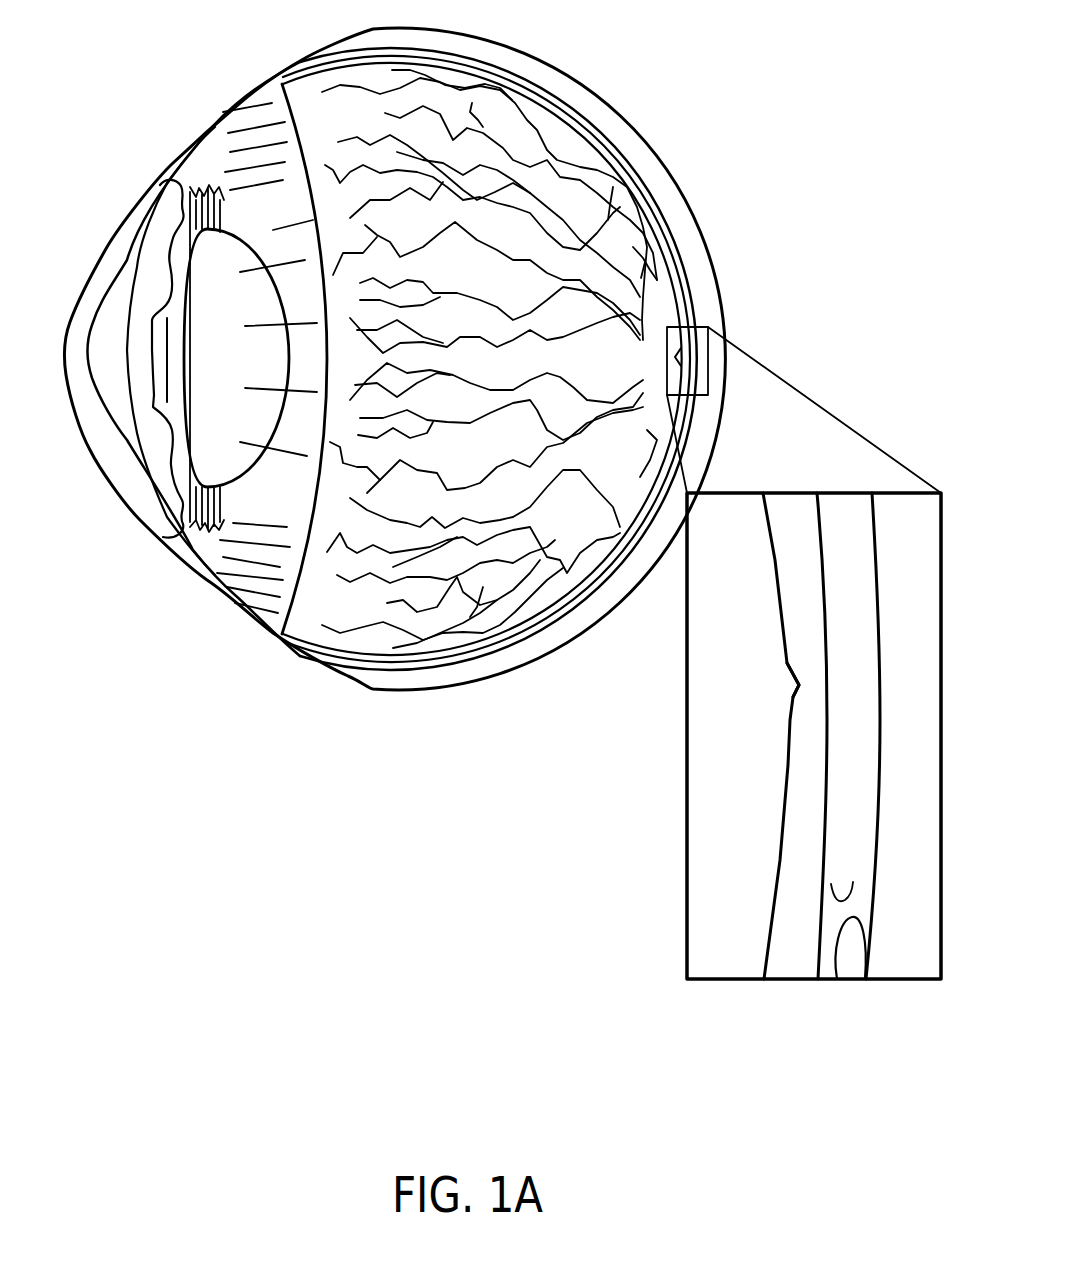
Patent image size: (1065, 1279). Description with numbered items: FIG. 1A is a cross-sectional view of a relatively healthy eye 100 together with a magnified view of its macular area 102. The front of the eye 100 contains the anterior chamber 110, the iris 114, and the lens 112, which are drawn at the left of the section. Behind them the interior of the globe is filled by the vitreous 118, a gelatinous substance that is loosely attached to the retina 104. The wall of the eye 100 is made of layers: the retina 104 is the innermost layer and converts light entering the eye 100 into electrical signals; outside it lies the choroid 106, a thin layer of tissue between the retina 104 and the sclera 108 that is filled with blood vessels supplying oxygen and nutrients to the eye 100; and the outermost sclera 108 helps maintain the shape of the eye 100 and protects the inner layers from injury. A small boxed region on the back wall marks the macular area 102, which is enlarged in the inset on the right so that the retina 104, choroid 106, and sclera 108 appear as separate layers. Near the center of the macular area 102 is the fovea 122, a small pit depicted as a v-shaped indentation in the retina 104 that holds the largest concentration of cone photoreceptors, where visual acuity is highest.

The eye 100 is at (184, 91).
The macular area 102 is at (700, 323).
The retina 104 is at (790, 522).
The choroid 106 is at (848, 513).
The sclera 108 is at (907, 522).
The anterior chamber 110 is at (112, 393).
The lens 112 is at (208, 445).
The iris 114 is at (168, 262).
The vitreous 118 is at (590, 167).
The fovea 122 is at (796, 685).